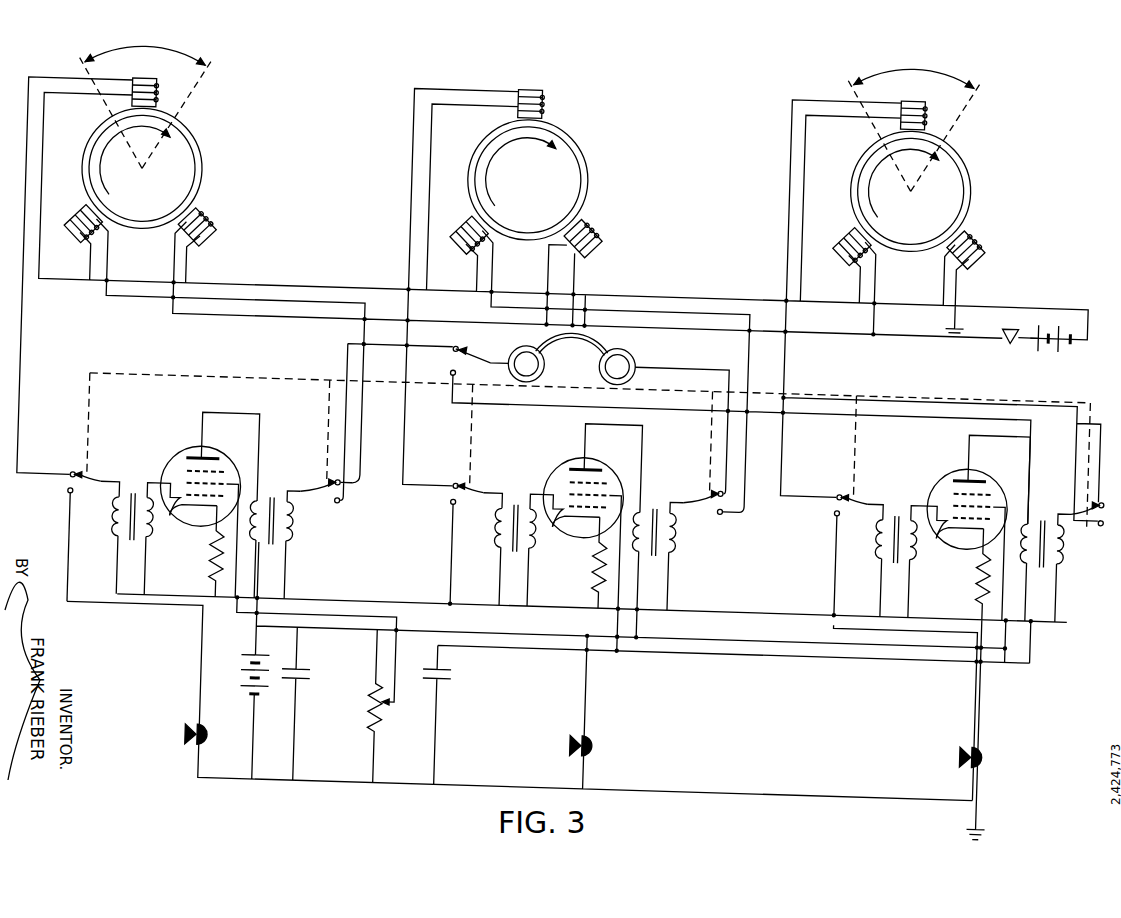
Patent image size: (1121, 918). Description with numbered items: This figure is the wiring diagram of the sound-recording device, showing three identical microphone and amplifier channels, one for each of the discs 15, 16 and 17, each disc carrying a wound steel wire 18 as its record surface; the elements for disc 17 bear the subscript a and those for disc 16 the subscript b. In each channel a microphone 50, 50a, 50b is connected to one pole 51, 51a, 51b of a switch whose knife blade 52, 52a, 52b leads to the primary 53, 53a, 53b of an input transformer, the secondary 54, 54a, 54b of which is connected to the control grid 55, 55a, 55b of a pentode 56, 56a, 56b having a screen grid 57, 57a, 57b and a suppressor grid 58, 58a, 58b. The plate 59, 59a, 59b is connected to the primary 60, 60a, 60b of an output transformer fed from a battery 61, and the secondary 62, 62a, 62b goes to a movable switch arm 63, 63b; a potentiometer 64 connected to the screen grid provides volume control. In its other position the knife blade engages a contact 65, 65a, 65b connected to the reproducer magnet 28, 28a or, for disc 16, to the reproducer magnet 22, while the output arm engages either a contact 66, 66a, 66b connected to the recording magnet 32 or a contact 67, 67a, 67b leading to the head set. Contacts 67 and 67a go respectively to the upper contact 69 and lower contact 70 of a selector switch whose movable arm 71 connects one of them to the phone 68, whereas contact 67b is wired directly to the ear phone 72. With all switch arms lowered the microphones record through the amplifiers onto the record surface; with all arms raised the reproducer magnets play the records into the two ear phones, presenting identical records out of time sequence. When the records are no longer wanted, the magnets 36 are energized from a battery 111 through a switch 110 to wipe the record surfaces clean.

The disc 15 is at (187, 152).
The disc 16 is at (573, 150).
The disc 17 is at (950, 144).
The steel wire 18 is at (208, 155).
The reproducer magnet 22 is at (545, 78).
The reproducer magnet 28 is at (159, 78).
The reproducer magnet 28a is at (930, 78).
The recording magnet 32 is at (81, 212).
The magnet 36 is at (207, 213).
The microphone 50 is at (190, 740).
The microphone 50a is at (950, 756).
The microphone 50b is at (563, 745).
The pole 51 is at (59, 543).
The pole 51a is at (827, 562).
The pole 51b is at (440, 551).
The knife blade 52 is at (98, 466).
The knife blade 52a is at (865, 492).
The knife blade 52b is at (484, 482).
The primary 53 is at (109, 537).
The primary 53a is at (881, 560).
The primary 53b is at (493, 548).
The secondary 54 is at (155, 526).
The secondary 54a is at (920, 551).
The secondary 54b is at (540, 543).
The control grid 55 is at (193, 550).
The control grid 55a is at (963, 573).
The control grid 55b is at (576, 562).
The pentode 56 is at (200, 475).
The pentode 56a is at (966, 504).
The pentode 56b is at (583, 493).
The screen grid 57 is at (258, 522).
The screen grid 57a is at (1015, 553).
The screen grid 57b is at (631, 542).
The suppressor grid 58 is at (221, 465).
The suppressor grid 58a is at (993, 493).
The suppressor grid 58b is at (610, 479).
The plate 59 is at (222, 456).
The plate 59a is at (991, 479).
The plate 59b is at (608, 467).
The primary 60 is at (269, 537).
The primary 60a is at (1043, 559).
The primary 60b is at (661, 547).
The battery 61 is at (262, 650).
The secondary 62 is at (303, 545).
The secondary 62a is at (1078, 568).
The secondary 62b is at (695, 557).
The movable arm 63 is at (324, 503).
The movable arm 63b is at (703, 510).
The potentiometer 64 is at (370, 730).
The contact 65 is at (70, 459).
The contact 65a is at (831, 486).
The contact 65b is at (453, 476).
The contact 66 is at (357, 513).
The contact 66a is at (1087, 530).
The contact 66b is at (740, 521).
The contact 67 is at (362, 471).
The contact 67a is at (1073, 495).
The contact 67b is at (752, 503).
The phone 68 is at (523, 342).
The upper contact 69 is at (460, 341).
The lower contact 70 is at (461, 364).
The movable arm 71 is at (487, 346).
The ear phone 72 is at (648, 342).
The switch 110 is at (1020, 316).
The battery 111 is at (1082, 313).